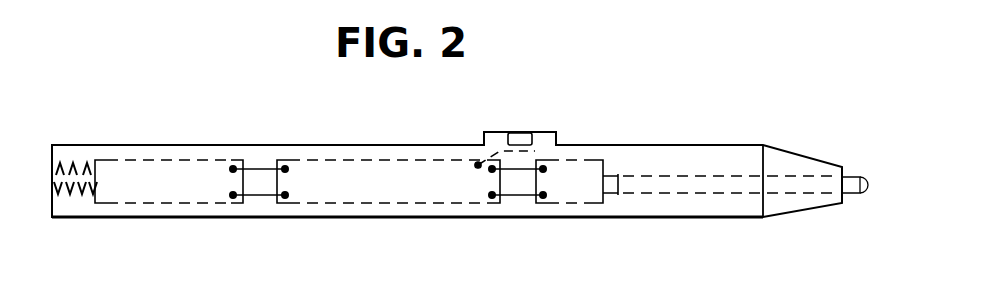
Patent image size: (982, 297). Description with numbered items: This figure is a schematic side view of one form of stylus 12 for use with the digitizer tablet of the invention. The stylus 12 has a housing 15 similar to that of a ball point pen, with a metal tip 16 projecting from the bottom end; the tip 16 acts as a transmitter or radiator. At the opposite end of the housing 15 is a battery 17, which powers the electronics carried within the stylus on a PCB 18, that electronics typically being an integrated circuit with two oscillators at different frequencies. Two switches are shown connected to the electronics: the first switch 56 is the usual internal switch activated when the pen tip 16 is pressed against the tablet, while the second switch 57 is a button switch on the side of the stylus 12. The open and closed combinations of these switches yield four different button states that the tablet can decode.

The stylus 12 is at (252, 116).
The housing 15 is at (152, 145).
The metal tip 16 is at (863, 188).
The battery 17 is at (162, 198).
The PCB 18 is at (337, 193).
The switch SW1 56 is at (572, 198).
The switch SW2 57 is at (542, 132).